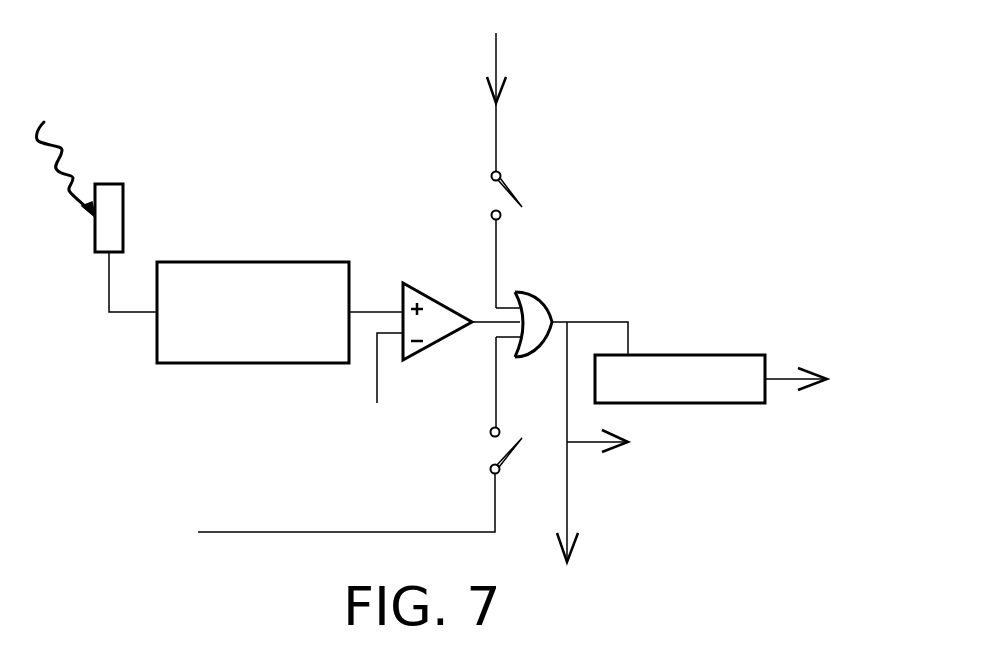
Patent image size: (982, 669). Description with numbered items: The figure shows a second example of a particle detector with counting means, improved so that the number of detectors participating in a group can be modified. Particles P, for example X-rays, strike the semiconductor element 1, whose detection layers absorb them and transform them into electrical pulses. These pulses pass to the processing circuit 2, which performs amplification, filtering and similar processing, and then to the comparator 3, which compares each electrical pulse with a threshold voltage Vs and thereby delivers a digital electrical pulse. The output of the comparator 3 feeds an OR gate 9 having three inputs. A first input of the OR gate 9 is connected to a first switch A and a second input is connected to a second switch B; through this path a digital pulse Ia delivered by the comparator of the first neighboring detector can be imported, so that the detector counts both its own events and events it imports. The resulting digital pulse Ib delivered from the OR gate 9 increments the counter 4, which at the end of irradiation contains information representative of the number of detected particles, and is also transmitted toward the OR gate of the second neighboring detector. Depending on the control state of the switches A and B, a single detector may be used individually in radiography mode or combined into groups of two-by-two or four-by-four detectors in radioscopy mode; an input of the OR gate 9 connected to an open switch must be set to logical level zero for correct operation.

The particles P is at (63, 148).
The semiconductor element 1 is at (118, 203).
The processing circuit 2 is at (275, 272).
The comparator 3 is at (443, 333).
The threshold voltage Vs is at (380, 425).
The OR gate 9 is at (540, 312).
The counter 4 is at (718, 366).
The first switch A is at (520, 190).
The second switch B is at (480, 453).
The digital pulse Ia is at (496, 60).
The digital pulse Ib is at (567, 500).